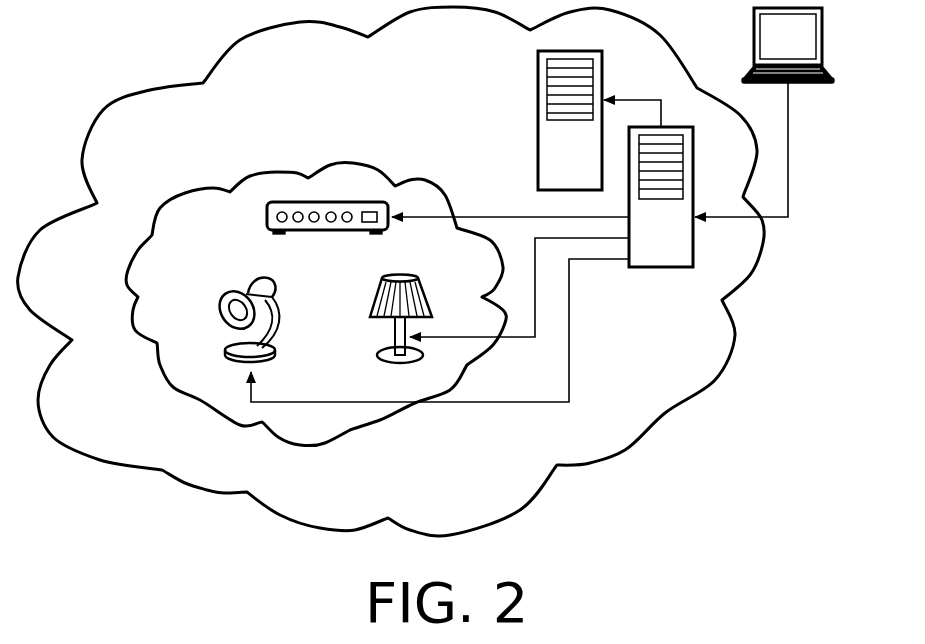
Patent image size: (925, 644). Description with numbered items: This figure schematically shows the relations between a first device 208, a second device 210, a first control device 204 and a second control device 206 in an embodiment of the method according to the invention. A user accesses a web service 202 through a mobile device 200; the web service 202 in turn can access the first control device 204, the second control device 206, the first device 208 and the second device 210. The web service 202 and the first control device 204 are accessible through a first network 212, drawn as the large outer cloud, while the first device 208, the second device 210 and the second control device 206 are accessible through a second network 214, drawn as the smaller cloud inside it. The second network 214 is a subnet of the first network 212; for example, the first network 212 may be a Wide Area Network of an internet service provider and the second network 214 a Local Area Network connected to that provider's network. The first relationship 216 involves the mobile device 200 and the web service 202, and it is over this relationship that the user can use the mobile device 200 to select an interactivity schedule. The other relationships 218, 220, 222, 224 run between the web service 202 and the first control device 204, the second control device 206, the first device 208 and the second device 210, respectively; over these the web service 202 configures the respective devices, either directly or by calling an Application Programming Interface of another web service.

The mobile device 200 is at (754, 27).
The web service 202 is at (661, 268).
The first control device 204 is at (538, 75).
The second control device 206 is at (266, 215).
The first device 208 is at (232, 291).
The second device 210 is at (382, 281).
The first network 212 is at (736, 336).
The second network 214 is at (351, 162).
The first relationship 216 is at (788, 148).
The relationship 218 is at (648, 99).
The relationship 220 is at (503, 215).
The relationship 222 is at (493, 403).
The relationship 224 is at (520, 338).